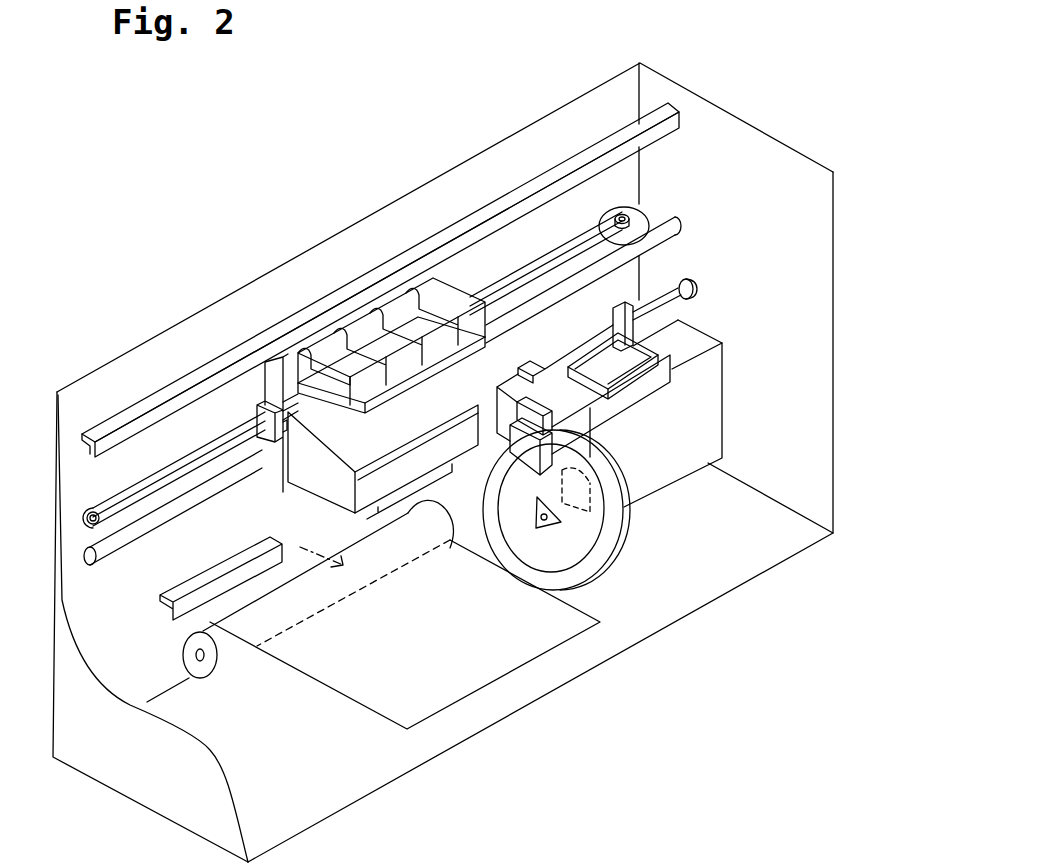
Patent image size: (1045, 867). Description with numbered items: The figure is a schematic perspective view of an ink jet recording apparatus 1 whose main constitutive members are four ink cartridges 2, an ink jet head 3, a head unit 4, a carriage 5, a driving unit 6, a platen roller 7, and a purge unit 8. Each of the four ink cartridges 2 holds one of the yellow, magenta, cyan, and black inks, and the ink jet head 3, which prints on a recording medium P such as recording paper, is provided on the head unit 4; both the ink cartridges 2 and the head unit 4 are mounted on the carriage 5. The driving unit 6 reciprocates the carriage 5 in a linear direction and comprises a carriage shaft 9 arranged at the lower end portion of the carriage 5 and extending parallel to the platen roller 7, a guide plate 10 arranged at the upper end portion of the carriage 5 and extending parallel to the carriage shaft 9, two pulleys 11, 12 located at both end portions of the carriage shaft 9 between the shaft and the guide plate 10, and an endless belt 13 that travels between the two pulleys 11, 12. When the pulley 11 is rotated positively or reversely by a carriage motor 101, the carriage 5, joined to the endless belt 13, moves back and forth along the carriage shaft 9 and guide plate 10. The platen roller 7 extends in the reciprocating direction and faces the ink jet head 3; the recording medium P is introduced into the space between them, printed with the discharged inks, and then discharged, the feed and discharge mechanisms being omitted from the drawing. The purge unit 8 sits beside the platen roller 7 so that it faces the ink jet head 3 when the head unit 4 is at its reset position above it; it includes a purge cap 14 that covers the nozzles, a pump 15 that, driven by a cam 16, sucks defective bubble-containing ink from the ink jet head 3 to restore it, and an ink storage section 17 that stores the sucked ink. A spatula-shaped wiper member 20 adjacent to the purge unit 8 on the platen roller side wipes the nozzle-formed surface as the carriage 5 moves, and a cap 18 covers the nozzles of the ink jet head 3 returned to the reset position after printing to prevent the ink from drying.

The ink jet recording apparatus 1 is at (380, 134).
The ink cartridges 2 is at (388, 343).
The ink jet head 3 is at (435, 477).
The head unit 4 is at (311, 513).
The carriage 5 is at (275, 373).
The driving unit 6 is at (667, 90).
The platen roller 7 is at (233, 645).
The purge unit 8 is at (774, 444).
The carriage shaft 9 is at (680, 218).
The guide plate 10 is at (647, 102).
The pulley 11 is at (620, 213).
The pulley 12 is at (95, 511).
The endless belt 13 is at (549, 262).
The purge cap 14 is at (600, 397).
The pump 15 is at (582, 483).
The cam 16 is at (580, 553).
The ink storage section 17 is at (698, 440).
The cap 18 is at (624, 354).
The wiper member 20 is at (533, 425).
The carriage motor 101 is at (640, 218).
The recording medium P is at (397, 702).